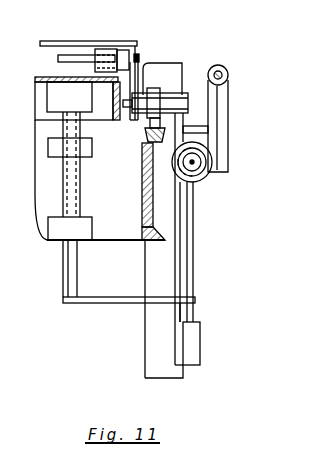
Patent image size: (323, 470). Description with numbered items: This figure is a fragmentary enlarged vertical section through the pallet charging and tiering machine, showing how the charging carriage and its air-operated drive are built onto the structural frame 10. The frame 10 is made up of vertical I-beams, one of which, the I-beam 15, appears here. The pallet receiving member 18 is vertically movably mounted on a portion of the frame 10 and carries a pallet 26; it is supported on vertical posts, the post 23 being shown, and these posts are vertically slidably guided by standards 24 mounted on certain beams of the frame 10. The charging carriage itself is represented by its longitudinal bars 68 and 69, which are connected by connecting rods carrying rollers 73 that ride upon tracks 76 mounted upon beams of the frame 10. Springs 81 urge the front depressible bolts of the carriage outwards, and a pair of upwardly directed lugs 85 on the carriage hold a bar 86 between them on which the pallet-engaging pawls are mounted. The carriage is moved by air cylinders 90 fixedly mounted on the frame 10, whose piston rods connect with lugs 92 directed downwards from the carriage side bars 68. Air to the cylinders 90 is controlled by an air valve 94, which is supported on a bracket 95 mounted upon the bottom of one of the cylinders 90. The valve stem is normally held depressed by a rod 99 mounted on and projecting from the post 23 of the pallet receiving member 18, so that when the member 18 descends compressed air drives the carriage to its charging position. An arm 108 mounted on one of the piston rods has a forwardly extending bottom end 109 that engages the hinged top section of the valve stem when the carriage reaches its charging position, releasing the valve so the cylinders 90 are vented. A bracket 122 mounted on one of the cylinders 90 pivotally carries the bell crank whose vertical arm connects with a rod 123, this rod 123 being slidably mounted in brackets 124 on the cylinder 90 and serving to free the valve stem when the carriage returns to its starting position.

The structural frame 10 is at (103, 262).
The vertical I-beam 15 is at (53, 43).
The pallet receiving member 18 is at (40, 108).
The vertical post 23 is at (65, 277).
The standard 24 is at (52, 148).
The pallet 26 is at (45, 78).
The longitudinal bar 68 is at (195, 105).
The longitudinal bar 69 is at (132, 122).
The roller 73 is at (156, 88).
The track 76 is at (159, 128).
The spring 81 is at (118, 50).
The upwardly directed lug 85 is at (138, 52).
The bar 86 is at (72, 60).
The air cylinder 90 is at (200, 178).
The lug 92 is at (198, 129).
The air valve 94 is at (193, 341).
The bracket 95 is at (178, 260).
The rod 99 is at (100, 303).
The arm 108 is at (194, 228).
The forwardly extending bottom end 109 is at (237, 6).
The bracket 122 is at (17, 23).
The rod 123 is at (226, 71).
The bracket 124 is at (220, 100).